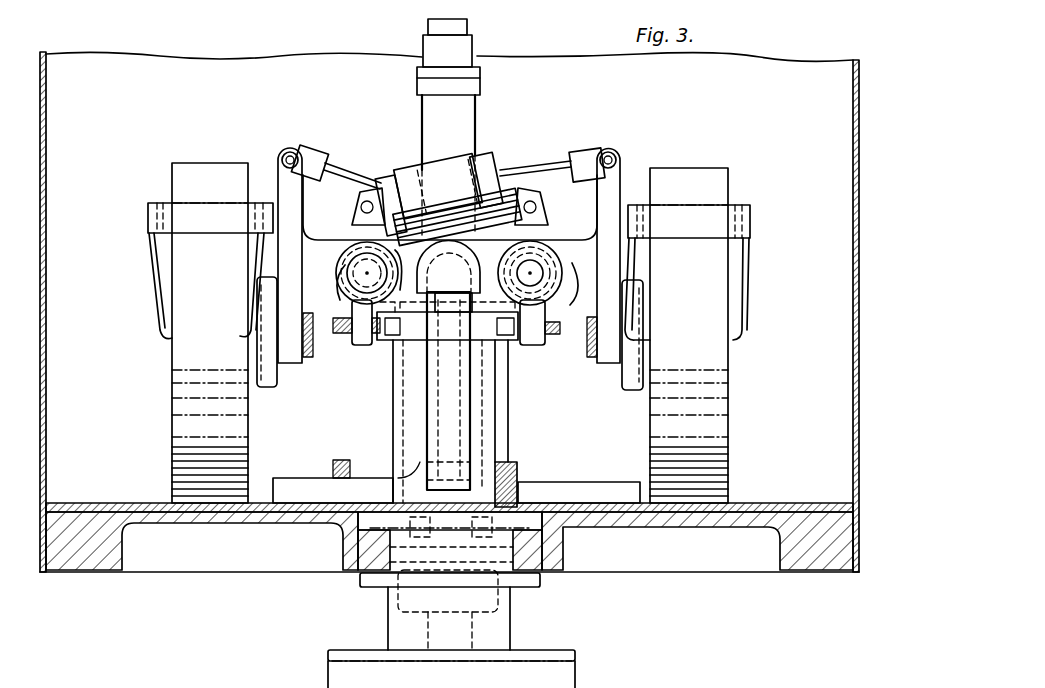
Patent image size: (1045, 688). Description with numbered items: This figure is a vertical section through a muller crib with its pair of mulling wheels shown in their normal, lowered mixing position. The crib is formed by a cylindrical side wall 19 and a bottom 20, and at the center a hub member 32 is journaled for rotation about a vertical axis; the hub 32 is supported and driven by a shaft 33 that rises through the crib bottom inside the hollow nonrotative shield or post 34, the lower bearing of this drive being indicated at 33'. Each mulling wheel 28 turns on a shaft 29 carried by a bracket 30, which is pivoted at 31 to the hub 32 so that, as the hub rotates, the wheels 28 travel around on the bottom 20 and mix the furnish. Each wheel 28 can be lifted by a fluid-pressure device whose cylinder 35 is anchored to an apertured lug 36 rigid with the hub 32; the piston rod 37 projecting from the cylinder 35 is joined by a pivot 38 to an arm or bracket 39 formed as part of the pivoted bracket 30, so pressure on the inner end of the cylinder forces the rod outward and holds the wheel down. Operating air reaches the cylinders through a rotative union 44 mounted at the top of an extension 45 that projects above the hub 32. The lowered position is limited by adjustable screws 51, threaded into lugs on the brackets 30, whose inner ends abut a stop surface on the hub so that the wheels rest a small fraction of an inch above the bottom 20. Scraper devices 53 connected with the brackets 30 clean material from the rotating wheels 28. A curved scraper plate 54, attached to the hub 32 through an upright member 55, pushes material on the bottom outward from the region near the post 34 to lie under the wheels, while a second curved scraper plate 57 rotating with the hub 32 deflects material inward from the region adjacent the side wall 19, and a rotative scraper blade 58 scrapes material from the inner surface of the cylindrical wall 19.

The cylindrical side wall 19 is at (854, 178).
The bottom 20 is at (815, 503).
The mulling wheel 28 is at (225, 427).
The shaft 29 is at (304, 345).
The bracket 30 is at (573, 272).
The pivot 31 is at (517, 340).
The hub member 32 is at (488, 258).
The shaft 33 is at (450, 207).
The lower bearing 33' is at (451, 600).
The hollow nonrotative shield or post 34 is at (393, 426).
The cylinder 35 is at (443, 175).
The apertured lug 36 is at (356, 207).
The piston rod 37 is at (520, 168).
The pivot 38 is at (606, 154).
The arm or bracket 39 is at (613, 180).
The rotative union 44 is at (482, 49).
The extension 45 is at (433, 126).
The adjustable screw 51 is at (345, 313).
The scraper device 53 is at (147, 212).
The curved scraper plate 54 is at (318, 478).
The upright member 55 is at (470, 428).
The curved scraper plate 57 is at (565, 482).
The rotative scraper blade 58 is at (430, 372).